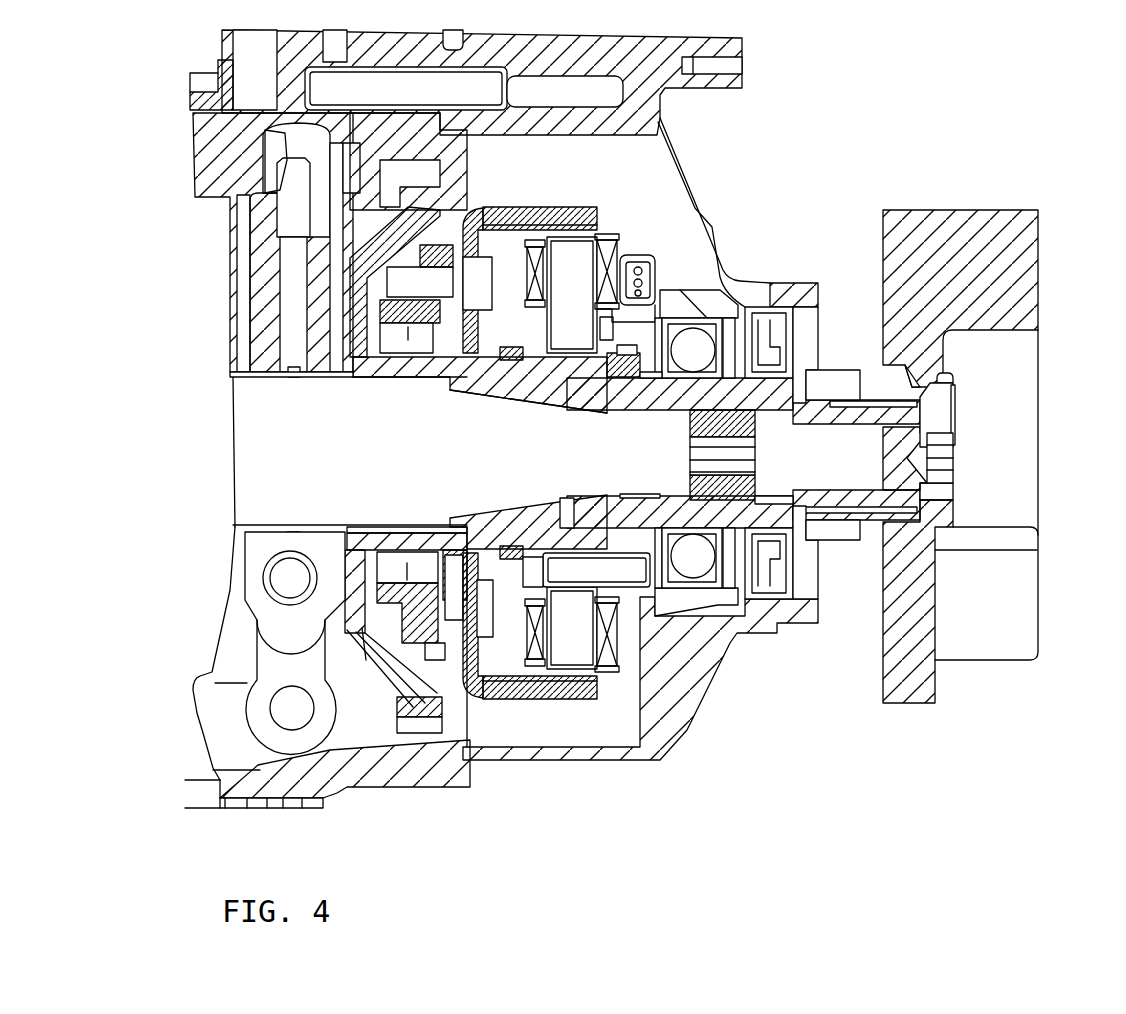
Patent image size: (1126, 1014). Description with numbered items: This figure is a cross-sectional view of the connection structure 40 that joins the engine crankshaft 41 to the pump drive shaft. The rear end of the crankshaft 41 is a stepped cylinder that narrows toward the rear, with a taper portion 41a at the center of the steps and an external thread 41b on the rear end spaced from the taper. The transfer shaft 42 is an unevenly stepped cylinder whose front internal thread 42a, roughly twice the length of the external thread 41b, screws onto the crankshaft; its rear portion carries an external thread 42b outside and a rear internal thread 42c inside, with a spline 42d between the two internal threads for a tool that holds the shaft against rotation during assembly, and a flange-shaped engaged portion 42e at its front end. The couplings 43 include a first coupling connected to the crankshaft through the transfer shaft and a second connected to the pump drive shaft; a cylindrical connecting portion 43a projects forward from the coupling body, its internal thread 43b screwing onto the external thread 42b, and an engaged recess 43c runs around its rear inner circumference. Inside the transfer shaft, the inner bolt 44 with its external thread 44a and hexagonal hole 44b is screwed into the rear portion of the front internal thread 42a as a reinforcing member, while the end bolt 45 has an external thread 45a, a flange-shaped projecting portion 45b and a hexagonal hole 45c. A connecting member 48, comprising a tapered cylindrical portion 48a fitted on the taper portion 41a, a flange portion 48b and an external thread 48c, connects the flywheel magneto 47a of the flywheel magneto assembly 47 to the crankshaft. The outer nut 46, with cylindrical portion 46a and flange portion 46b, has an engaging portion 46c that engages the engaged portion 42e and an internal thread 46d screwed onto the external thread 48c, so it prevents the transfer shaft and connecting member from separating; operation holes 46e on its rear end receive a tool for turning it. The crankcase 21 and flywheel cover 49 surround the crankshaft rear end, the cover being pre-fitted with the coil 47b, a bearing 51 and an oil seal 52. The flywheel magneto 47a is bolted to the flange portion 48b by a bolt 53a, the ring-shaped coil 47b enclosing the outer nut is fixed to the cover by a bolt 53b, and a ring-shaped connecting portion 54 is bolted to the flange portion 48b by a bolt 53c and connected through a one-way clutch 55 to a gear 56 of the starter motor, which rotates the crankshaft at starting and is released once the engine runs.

The crankcase 21 is at (233, 293).
The connection structure 40 is at (643, 419).
The crankshaft 41 is at (240, 412).
The taper portion 41a is at (512, 388).
The external thread 41b is at (663, 393).
The transfer shaft 42 is at (660, 412).
The front internal thread 42a is at (667, 498).
The external thread 42b is at (833, 401).
The rear internal thread 42c is at (930, 492).
The spline 42d is at (813, 497).
The engaged portion 42e is at (567, 527).
The couplings 43 is at (960, 215).
The cylindrical connecting portion 43a is at (847, 377).
The internal thread 43b is at (863, 528).
The engaged recess 43c is at (947, 383).
The inner bolt 44 is at (756, 471).
The external thread 44a is at (792, 505).
The hole 44b is at (755, 470).
The end bolt 45 is at (964, 413).
The external thread 45a is at (920, 387).
The projecting portion 45b is at (956, 393).
The hole 45c is at (940, 481).
The outer nut 46 is at (528, 360).
The cylindrical portion 46a is at (550, 388).
The flange portion 46b is at (497, 530).
The engaging portion 46c is at (560, 413).
The internal thread 46d is at (513, 540).
The operation holes 46e is at (640, 387).
The flywheel magneto assembly 47 is at (569, 243).
The flywheel magneto 47a is at (553, 218).
The coil 47b is at (528, 168).
The connecting member 48 is at (396, 498).
The cylindrical portion 48a is at (450, 523).
The flange portion 48b is at (450, 527).
The external thread 48c is at (472, 378).
The flywheel cover 49 is at (660, 110).
The bearing 51 is at (698, 330).
The oil seal 52 is at (760, 307).
The bolt 53a is at (480, 267).
The bolt 53b is at (643, 578).
The bolt 53c is at (490, 595).
The connecting portion 54 is at (402, 650).
The one-way clutch 55 is at (367, 523).
The gear 56 is at (363, 653).